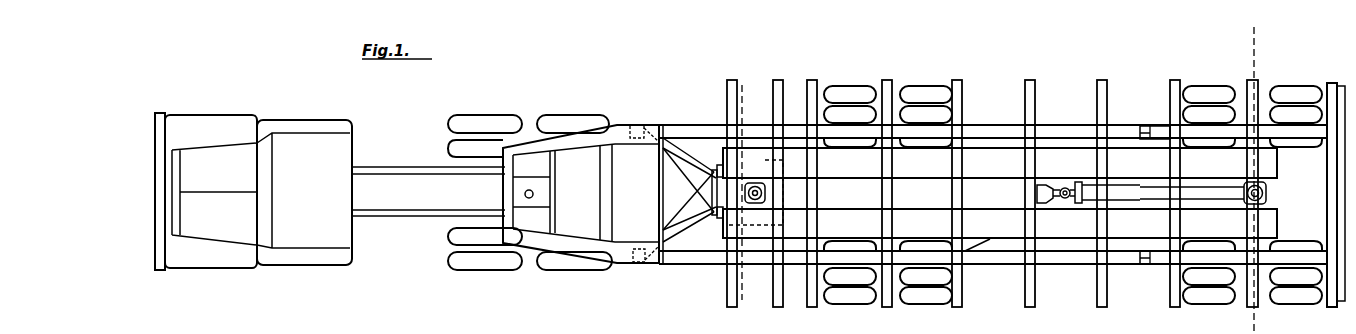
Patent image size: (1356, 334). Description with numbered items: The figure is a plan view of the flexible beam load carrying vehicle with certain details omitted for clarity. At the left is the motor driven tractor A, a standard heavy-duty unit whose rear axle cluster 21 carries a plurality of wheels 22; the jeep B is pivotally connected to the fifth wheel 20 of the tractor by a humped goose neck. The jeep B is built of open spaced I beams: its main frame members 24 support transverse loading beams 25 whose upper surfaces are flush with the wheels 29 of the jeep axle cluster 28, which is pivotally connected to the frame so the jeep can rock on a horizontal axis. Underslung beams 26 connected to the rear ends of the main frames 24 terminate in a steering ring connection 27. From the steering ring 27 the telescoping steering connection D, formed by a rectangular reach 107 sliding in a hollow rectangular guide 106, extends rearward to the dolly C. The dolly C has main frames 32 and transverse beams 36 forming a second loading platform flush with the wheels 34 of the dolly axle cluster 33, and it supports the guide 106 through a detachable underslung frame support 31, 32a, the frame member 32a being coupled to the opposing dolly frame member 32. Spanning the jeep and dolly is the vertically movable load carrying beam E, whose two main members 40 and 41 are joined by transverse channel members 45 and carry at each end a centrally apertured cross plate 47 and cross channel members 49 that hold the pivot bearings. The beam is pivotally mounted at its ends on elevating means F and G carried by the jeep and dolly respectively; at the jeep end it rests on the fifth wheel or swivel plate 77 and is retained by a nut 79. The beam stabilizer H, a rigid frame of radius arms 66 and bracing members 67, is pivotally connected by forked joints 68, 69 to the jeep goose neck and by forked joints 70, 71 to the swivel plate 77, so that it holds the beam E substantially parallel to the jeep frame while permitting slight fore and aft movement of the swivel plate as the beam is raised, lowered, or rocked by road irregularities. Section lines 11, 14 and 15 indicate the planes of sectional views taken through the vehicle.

The section line 11- 11 is at (770, 110).
The section line 14- 14 is at (1287, 46).
The section line 15- 15 is at (1233, 193).
The fifth wheel 20 is at (524, 194).
The rear axle cluster 21 is at (484, 114).
The wheels 22 is at (563, 118).
The main frame members 24 is at (687, 128).
The transverse loading beams 25 is at (811, 307).
The underslung beams 26 is at (1042, 204).
The steering ring connection 27 is at (1066, 189).
The axle cluster 28 is at (864, 82).
The wheels 29 is at (921, 290).
The underslung frame support 31 is at (1087, 182).
The main frames 32 is at (1207, 260).
The underslung frame support member 32a is at (1143, 264).
The axle cluster 33 is at (1275, 92).
The wheels 34 is at (1193, 277).
The transverse beams 36 is at (1250, 82).
The main member 40 is at (1010, 230).
The main member 41 is at (1007, 170).
The transverse channel members 45 is at (1270, 202).
The cross plates 47 is at (1234, 182).
The cross channel members 49 is at (764, 201).
The radius arms 66 is at (683, 147).
The bracing members 67 is at (687, 207).
The forked joint 68 is at (637, 263).
The forked joint 69 is at (632, 123).
The forked joint 70 is at (689, 229).
The forked joint 71 is at (723, 167).
The swivel plate 77 is at (778, 193).
The nut 79 is at (1252, 204).
The hollow rectangular guide 106 is at (1141, 197).
The rectangular reach 107 is at (1077, 204).
The tractor A is at (312, 238).
The jeep B is at (645, 231).
The dolly C is at (1265, 278).
The telescoping steering connection D is at (1129, 198).
The load carrying beam E is at (966, 162).
The elevating means F is at (747, 203).
The elevating means G is at (1266, 206).
The beam stabilizer H is at (678, 146).